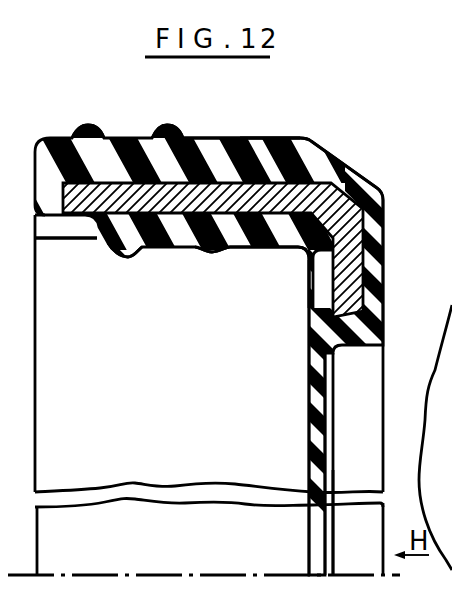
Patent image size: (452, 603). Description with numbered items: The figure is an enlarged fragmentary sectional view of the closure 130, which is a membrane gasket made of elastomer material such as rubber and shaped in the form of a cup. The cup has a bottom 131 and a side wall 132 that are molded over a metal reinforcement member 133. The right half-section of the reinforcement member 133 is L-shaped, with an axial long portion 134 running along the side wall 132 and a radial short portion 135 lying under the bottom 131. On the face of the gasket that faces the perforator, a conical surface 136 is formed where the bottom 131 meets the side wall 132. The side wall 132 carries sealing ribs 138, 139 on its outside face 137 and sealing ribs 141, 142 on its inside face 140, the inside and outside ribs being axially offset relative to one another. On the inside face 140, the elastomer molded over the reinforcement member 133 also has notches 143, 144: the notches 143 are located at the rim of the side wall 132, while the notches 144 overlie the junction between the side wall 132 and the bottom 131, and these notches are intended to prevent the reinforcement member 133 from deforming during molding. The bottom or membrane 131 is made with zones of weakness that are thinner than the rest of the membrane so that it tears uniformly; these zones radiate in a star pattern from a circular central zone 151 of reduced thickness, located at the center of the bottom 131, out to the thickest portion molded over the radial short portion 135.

The closure 130 is at (451, 592).
The bottom 131 is at (309, 394).
The side wall 132 is at (122, 118).
The metal reinforcement member 133 is at (97, 240).
The axial long portion 134 is at (279, 138).
The radial short portion 135 is at (354, 263).
The conical surface 136 is at (341, 149).
The outside face 137 is at (225, 138).
The sealing rib 138 is at (92, 126).
The sealing rib 139 is at (165, 125).
The inside face 140 is at (245, 252).
The sealing rib 141 is at (199, 253).
The sealing rib 142 is at (133, 258).
The notch 143 is at (68, 226).
The notch 144 is at (326, 269).
The circular central zone 151 is at (333, 478).